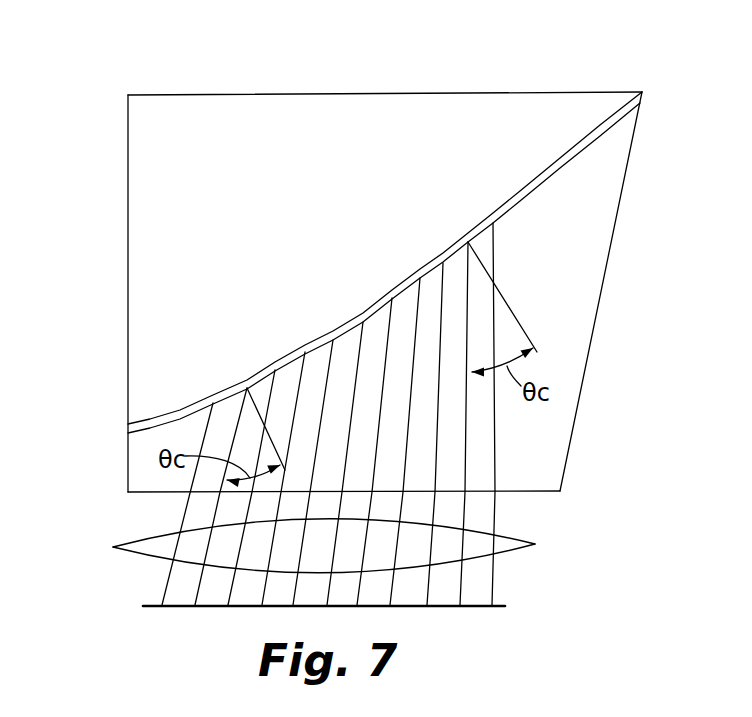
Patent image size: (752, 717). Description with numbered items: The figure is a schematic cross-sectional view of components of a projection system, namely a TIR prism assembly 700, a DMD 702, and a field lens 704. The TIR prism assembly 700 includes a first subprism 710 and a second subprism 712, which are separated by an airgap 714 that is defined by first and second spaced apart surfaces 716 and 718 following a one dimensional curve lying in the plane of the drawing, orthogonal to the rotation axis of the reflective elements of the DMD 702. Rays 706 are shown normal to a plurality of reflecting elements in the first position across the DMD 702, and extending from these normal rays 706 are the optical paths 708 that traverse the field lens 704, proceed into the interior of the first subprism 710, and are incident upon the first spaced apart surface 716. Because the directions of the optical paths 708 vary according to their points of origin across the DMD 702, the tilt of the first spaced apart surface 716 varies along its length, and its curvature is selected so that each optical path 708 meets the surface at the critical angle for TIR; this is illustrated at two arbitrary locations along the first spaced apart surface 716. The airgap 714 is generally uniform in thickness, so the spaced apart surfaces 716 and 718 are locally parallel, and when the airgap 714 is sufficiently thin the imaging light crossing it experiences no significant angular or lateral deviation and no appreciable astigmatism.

The TIR prism assembly 700 is at (365, 251).
The DMD 702 is at (183, 607).
The field lens 704 is at (150, 548).
The rays 706 is at (493, 577).
The optical paths 708 is at (494, 241).
The first subprism 710 is at (613, 183).
The second subprism 712 is at (137, 290).
The airgap 714 is at (338, 291).
The first spaced apart surface 716 is at (148, 430).
The second spaced apart surface 718 is at (155, 416).